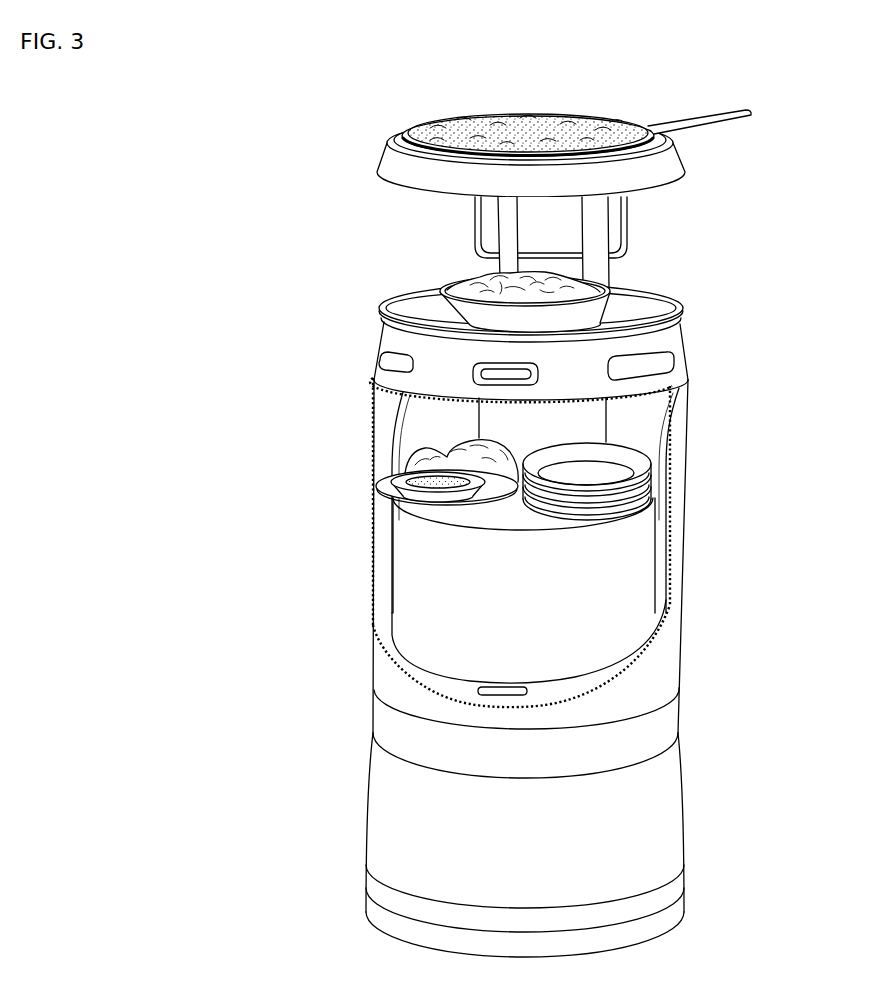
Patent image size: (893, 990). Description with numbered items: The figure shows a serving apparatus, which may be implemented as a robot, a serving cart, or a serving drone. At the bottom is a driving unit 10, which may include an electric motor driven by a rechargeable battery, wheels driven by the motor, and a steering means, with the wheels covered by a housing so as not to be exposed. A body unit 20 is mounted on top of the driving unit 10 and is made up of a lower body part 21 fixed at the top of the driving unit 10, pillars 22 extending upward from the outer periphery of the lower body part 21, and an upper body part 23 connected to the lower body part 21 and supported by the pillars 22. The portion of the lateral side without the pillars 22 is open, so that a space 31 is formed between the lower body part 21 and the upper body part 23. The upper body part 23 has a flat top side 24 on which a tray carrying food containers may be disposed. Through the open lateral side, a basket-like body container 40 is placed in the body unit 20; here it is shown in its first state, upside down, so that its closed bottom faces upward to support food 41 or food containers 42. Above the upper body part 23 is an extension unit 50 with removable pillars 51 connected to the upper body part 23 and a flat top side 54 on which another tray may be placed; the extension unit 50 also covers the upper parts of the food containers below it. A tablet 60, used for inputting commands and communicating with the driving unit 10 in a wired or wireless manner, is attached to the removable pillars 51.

The driving unit 10 is at (381, 822).
The body unit 20 is at (352, 537).
The lower body part 21 is at (383, 673).
The pillars 22 is at (427, 408).
The upper body part 23 is at (390, 335).
The top side 24 is at (675, 325).
The space 31 is at (673, 500).
The body container 40 is at (638, 570).
The food 41 is at (403, 466).
The food containers 42 is at (639, 454).
The extension unit 50 is at (385, 163).
The removable pillars 51 is at (505, 230).
The top side 54 is at (668, 143).
The tablet 60 is at (620, 226).